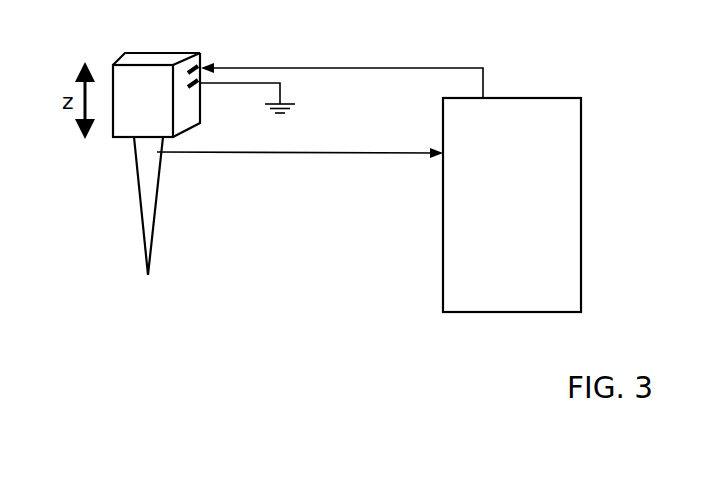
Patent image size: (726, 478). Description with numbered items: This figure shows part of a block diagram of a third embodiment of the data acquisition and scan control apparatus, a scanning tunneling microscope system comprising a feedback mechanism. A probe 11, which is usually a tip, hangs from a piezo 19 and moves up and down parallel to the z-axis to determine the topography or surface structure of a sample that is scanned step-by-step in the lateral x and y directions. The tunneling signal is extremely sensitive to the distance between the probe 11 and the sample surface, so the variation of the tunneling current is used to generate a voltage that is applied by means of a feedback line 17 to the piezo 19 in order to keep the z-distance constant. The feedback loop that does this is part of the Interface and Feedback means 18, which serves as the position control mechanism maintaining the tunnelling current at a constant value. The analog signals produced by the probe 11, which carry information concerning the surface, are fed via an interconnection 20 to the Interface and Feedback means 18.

The probe 11 is at (150, 185).
The feedback line 17 is at (403, 68).
The Interface and Feedback means 18 is at (525, 108).
The piezo 19 is at (158, 61).
The interconnection 20 is at (363, 152).